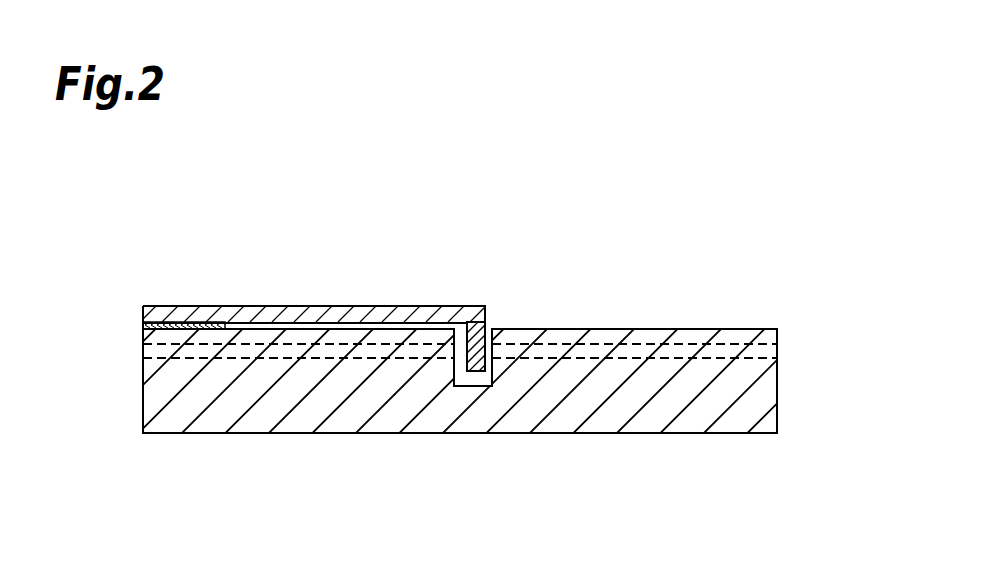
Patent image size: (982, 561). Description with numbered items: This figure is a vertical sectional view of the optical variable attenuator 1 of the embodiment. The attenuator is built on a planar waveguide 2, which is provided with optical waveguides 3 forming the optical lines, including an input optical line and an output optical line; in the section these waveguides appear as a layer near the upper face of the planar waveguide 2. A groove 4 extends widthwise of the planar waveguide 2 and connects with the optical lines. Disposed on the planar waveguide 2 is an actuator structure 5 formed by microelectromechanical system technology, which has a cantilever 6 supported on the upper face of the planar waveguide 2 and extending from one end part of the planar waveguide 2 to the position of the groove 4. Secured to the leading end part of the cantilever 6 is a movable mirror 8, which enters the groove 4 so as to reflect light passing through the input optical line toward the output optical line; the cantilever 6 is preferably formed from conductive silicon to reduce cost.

The optical variable attenuator 1 is at (722, 166).
The planar waveguide 2 is at (707, 420).
The optical waveguides 3 is at (661, 345).
The groove 4 is at (478, 380).
The actuator structure 5 is at (192, 298).
The cantilever 6 is at (327, 305).
The movable mirror 8 is at (487, 323).